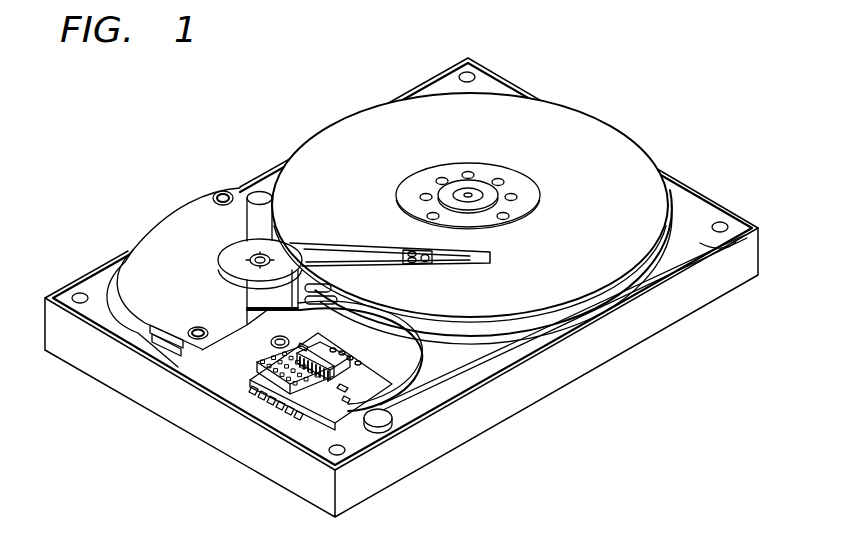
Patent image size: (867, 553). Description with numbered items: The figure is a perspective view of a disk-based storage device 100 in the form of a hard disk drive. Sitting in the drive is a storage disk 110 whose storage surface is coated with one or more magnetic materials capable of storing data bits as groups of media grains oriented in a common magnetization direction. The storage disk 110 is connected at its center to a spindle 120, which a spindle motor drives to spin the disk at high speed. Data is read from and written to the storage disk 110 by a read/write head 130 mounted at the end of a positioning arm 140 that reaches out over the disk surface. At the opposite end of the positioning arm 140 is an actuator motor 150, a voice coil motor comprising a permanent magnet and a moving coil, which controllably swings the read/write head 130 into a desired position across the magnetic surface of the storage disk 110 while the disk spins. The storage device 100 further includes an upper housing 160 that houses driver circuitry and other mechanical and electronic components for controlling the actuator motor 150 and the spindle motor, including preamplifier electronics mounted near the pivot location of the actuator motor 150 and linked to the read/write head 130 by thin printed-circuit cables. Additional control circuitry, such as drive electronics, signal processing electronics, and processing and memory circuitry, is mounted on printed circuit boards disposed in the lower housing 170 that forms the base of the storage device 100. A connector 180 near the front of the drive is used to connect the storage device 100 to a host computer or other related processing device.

The storage device 100 is at (178, 105).
The storage disk 110 is at (588, 130).
The spindle 120 is at (490, 196).
The read/write head 130 is at (462, 257).
The positioning arm 140 is at (327, 246).
The actuator motor 150 is at (240, 276).
The upper housing 160 is at (158, 243).
The lower housing 170 is at (378, 470).
The connector 180 is at (270, 388).